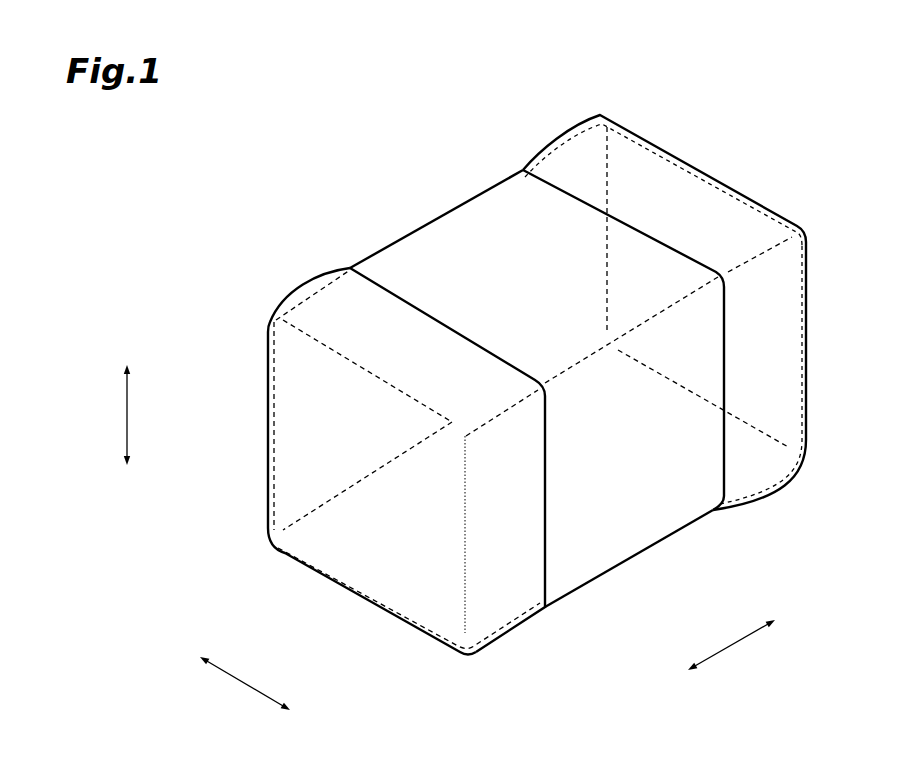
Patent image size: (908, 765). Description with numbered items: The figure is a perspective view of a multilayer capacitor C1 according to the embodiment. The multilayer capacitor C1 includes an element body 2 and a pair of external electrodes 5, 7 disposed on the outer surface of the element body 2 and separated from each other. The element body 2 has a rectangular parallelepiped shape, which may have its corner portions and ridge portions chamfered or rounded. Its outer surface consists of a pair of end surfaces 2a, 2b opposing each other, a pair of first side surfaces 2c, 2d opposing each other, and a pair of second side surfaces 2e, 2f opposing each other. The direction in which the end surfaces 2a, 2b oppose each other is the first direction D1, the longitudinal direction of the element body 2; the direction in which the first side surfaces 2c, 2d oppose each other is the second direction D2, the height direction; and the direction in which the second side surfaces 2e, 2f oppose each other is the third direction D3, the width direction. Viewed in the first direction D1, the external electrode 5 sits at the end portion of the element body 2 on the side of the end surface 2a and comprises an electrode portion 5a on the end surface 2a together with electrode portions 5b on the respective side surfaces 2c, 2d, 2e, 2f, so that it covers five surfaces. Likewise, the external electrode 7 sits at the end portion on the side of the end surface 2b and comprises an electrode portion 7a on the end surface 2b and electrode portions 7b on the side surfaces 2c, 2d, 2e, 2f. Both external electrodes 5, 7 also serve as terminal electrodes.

The multilayer capacitor C1 is at (788, 148).
The element body 2 is at (432, 218).
The end surface 2a is at (360, 538).
The end surface 2b is at (773, 338).
The first side surface 2c is at (503, 220).
The first side surface 2d is at (577, 527).
The second side surface 2e is at (422, 267).
The second side surface 2f is at (618, 527).
The external electrode 5 is at (272, 307).
The electrode portion 5a is at (433, 577).
The electrode portions 5b is at (447, 368).
The external electrode 7 is at (580, 123).
The electrode portion 7a is at (807, 282).
The electrode portions 7b is at (663, 187).
The first direction D1 is at (723, 655).
The second direction D2 is at (132, 417).
The third direction D3 is at (250, 677).